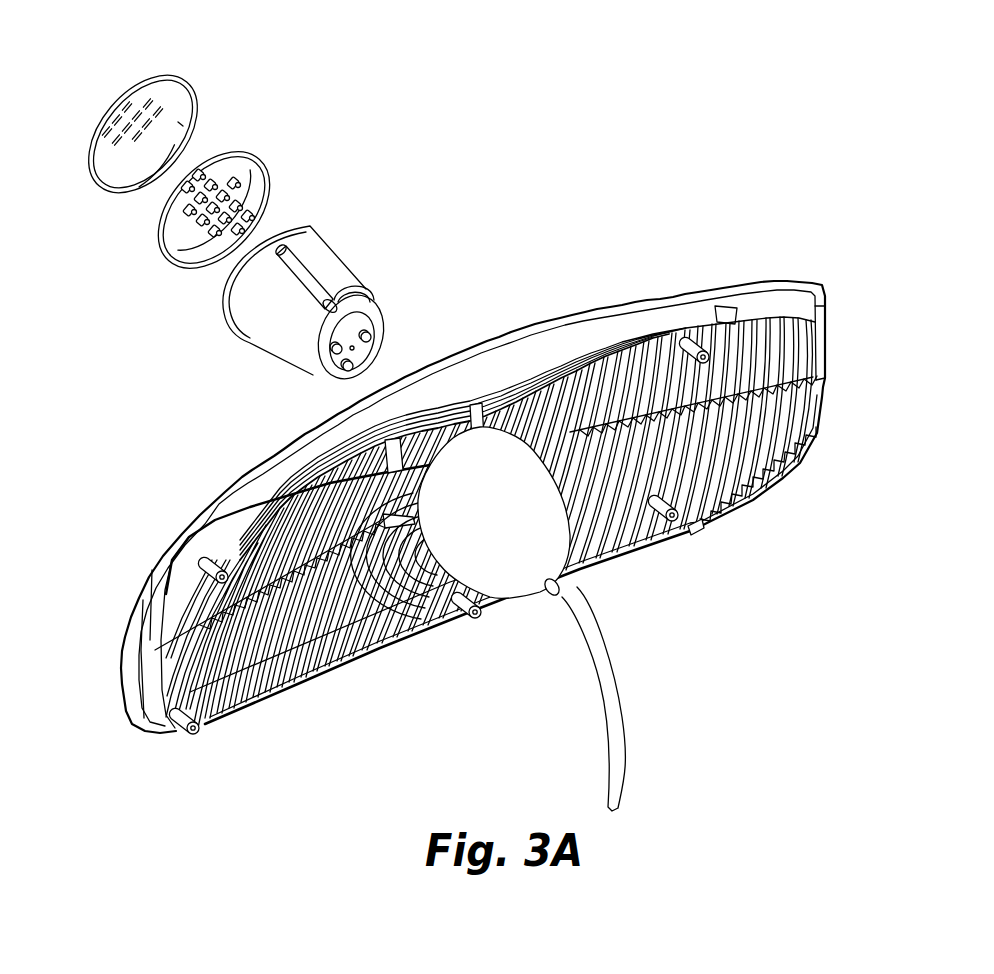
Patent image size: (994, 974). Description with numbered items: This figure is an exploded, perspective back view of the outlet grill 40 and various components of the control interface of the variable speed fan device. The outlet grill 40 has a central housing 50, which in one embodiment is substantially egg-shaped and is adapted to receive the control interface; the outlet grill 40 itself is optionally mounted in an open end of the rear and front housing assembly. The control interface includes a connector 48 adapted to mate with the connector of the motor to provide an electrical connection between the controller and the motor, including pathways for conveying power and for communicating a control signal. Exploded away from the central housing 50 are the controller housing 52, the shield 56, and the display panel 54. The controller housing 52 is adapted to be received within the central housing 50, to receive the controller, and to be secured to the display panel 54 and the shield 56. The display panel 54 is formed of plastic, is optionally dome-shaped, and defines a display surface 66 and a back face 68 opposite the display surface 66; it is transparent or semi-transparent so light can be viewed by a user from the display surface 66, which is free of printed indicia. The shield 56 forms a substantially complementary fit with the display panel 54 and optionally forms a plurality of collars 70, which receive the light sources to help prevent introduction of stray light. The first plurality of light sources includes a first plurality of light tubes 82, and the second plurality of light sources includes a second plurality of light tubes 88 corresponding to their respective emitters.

The outlet grill 40 is at (608, 304).
The connector 48 is at (610, 695).
The central housing 50 is at (521, 578).
The controller housing 52 is at (343, 275).
The display panel 54 is at (165, 80).
The shield 56 is at (258, 154).
The display surface 66 is at (113, 108).
The back face 68 is at (178, 122).
The collars 70 is at (227, 217).
The first plurality of light tubes 82 is at (104, 160).
The second plurality of light tubes 88 is at (160, 113).